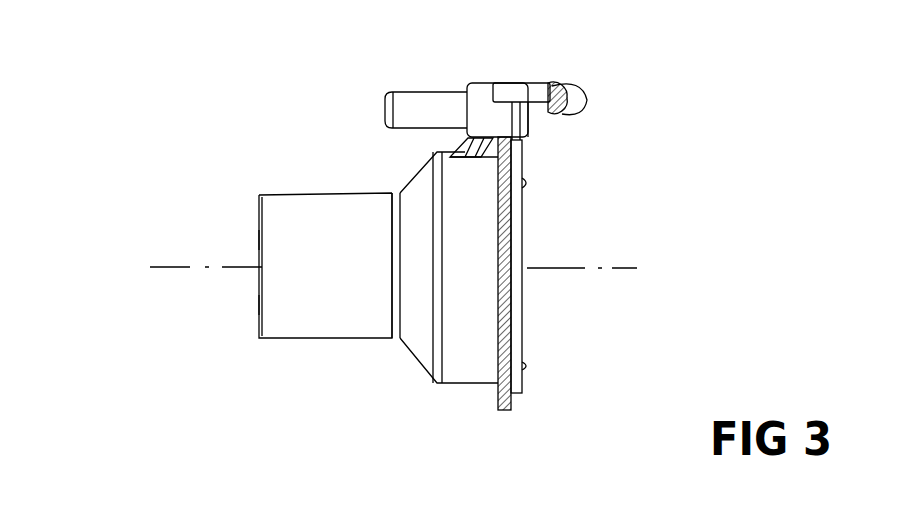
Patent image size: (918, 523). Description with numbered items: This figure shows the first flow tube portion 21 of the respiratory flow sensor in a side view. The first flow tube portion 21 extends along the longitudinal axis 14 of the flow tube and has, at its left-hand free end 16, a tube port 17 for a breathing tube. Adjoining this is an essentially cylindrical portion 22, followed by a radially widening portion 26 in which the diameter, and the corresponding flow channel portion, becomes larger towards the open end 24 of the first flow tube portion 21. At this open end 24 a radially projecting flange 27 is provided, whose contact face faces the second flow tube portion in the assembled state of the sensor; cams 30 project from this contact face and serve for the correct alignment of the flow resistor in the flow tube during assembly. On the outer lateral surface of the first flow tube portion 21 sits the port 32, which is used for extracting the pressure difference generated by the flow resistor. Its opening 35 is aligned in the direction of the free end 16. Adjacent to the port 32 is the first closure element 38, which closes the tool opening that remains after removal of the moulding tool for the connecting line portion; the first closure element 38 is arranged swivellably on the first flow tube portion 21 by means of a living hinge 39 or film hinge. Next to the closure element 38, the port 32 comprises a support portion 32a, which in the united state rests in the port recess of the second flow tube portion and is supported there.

The longitudinal axis 14 is at (173, 268).
The free end 16 is at (258, 313).
The tube port 17 is at (272, 244).
The first flow tube portion 21 is at (222, 136).
The essentially cylindrical portion 22 is at (262, 372).
The open end 24 is at (523, 316).
The radially widening portion 26 is at (517, 412).
The radially projecting flange 27 is at (512, 393).
The cams 30 is at (528, 183).
The port 32 is at (420, 72).
The support portion 32a is at (536, 132).
The opening 35 is at (372, 114).
The first closure element 38 is at (515, 84).
The living hinge 39 is at (578, 98).